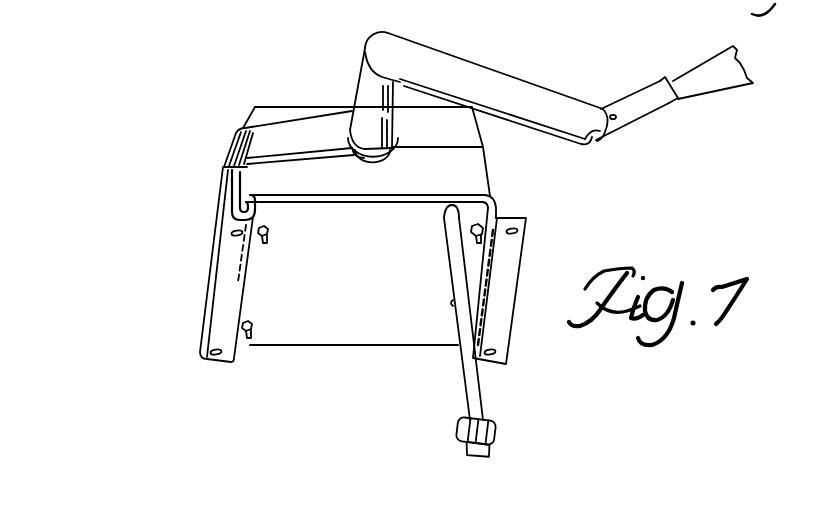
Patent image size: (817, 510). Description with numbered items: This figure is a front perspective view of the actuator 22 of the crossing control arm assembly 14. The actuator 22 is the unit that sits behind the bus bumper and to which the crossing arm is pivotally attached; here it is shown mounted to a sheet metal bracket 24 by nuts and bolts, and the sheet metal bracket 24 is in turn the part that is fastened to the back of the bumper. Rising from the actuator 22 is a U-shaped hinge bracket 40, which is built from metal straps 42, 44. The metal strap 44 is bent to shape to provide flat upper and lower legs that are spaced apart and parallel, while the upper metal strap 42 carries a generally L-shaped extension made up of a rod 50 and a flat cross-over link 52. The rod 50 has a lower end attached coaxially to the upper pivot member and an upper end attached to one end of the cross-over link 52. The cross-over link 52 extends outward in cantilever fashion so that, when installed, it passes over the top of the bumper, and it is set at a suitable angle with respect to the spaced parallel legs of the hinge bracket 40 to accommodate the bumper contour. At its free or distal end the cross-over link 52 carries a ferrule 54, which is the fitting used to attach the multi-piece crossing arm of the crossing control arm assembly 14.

The crossing control arm assembly 14 is at (722, 91).
The actuator 22 is at (485, 162).
The sheet metal bracket 24 is at (507, 262).
The U-shaped hinge bracket 40 is at (221, 156).
The upper metal strap 42 is at (313, 133).
The metal strap 44 is at (203, 285).
The rod 50 is at (368, 81).
The cross-over link 52 is at (520, 97).
The ferrule 54 is at (645, 112).